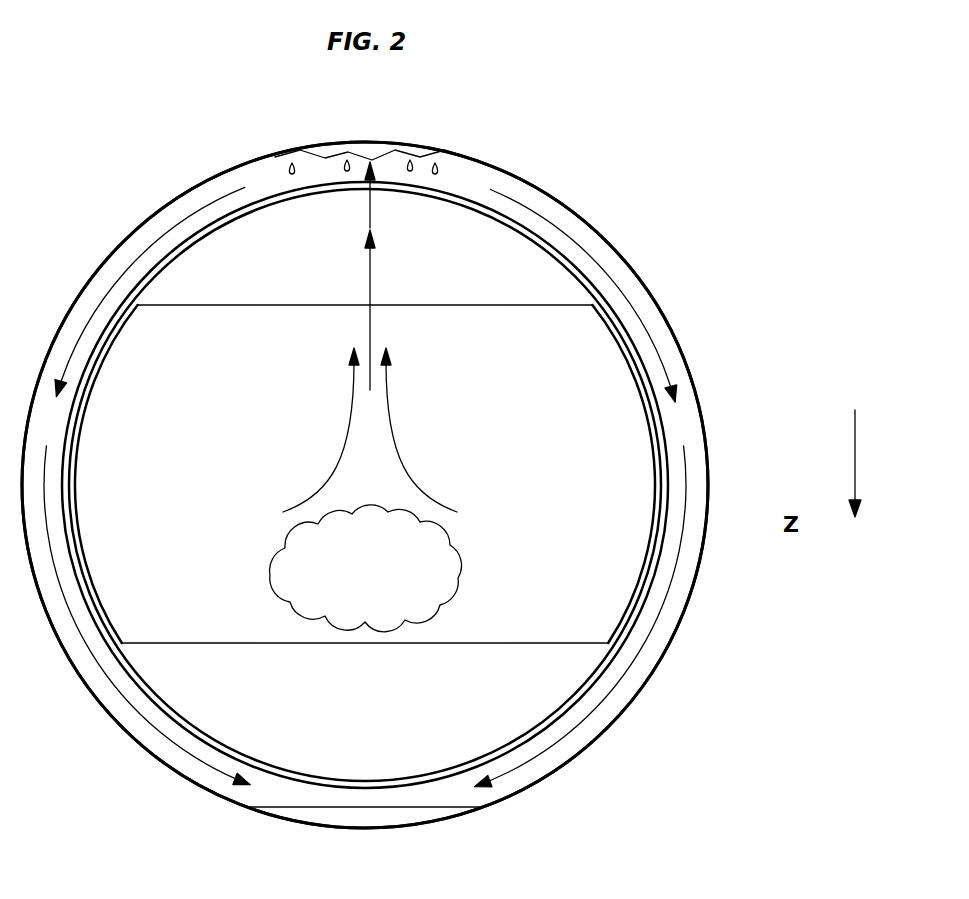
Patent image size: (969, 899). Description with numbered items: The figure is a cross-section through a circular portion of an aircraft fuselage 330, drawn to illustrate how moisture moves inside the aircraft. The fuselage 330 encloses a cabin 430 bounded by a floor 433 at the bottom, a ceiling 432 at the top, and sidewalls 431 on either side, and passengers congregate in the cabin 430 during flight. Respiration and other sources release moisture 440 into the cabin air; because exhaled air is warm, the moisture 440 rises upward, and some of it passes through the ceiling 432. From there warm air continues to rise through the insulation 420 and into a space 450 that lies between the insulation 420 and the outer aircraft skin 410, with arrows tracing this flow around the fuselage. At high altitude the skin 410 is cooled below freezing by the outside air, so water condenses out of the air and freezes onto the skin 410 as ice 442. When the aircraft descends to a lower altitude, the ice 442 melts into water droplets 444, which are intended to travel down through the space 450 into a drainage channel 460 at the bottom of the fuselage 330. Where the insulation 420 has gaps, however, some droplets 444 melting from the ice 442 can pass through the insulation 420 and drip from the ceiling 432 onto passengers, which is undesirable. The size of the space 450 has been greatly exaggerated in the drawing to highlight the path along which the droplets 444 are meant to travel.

The aircraft fuselage 330 is at (708, 743).
The aircraft skin 410 is at (630, 262).
The insulation 420 is at (668, 442).
The cabin 430 is at (228, 481).
The sidewalls 431 is at (82, 430).
The ceiling 432 is at (478, 305).
The floor 433 is at (500, 643).
The moisture 440 is at (448, 583).
The ice 442 is at (372, 153).
The water droplets 444 is at (292, 168).
The space 450 is at (686, 418).
The drainage channel 460 is at (343, 822).